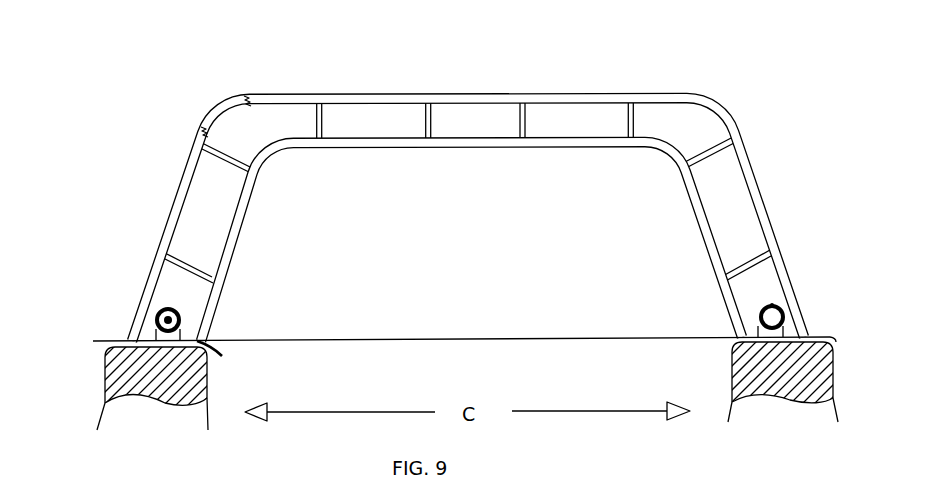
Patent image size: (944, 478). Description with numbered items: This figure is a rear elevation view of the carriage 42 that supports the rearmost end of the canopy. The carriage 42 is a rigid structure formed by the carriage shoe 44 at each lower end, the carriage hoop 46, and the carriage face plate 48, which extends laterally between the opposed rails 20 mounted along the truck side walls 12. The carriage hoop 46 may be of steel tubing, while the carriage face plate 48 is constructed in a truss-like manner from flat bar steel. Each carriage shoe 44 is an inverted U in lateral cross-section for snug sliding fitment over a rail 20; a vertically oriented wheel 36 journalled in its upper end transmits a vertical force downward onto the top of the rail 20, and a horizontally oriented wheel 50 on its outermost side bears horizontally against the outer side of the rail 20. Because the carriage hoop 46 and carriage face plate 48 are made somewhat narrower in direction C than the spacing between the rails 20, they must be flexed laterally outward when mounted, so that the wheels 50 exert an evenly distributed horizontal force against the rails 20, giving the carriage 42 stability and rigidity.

The side walls 12 is at (142, 400).
The rails 20 is at (190, 333).
The vertically oriented wheels 36 is at (166, 320).
The carriage 42 is at (452, 178).
The carriage shoe 44 is at (184, 318).
The carriage hoop 46 is at (232, 76).
The carriage face plate 48 is at (174, 192).
The horizontally oriented wheels 50 is at (895, 319).